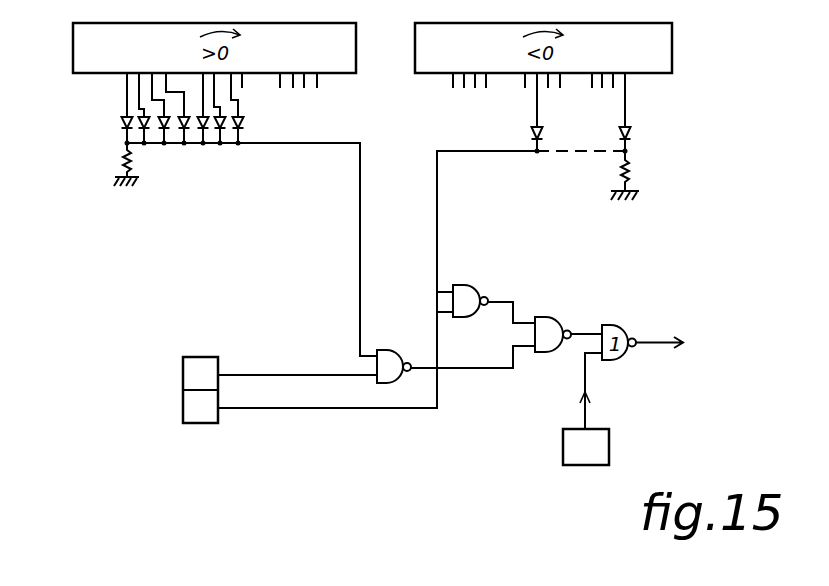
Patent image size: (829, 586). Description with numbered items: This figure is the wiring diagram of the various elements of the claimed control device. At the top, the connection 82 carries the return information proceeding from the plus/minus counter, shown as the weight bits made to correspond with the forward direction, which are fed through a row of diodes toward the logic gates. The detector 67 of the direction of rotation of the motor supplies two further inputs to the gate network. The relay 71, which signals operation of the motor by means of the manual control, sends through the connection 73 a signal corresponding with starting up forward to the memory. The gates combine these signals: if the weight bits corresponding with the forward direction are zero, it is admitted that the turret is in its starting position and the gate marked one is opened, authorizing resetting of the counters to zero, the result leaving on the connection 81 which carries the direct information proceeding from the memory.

The connection 82 is at (92, 78).
The detector of the direction of rotation of the motor 67 is at (170, 380).
The connection 81 is at (650, 333).
The connection 73 is at (605, 391).
The relay 71 is at (586, 447).